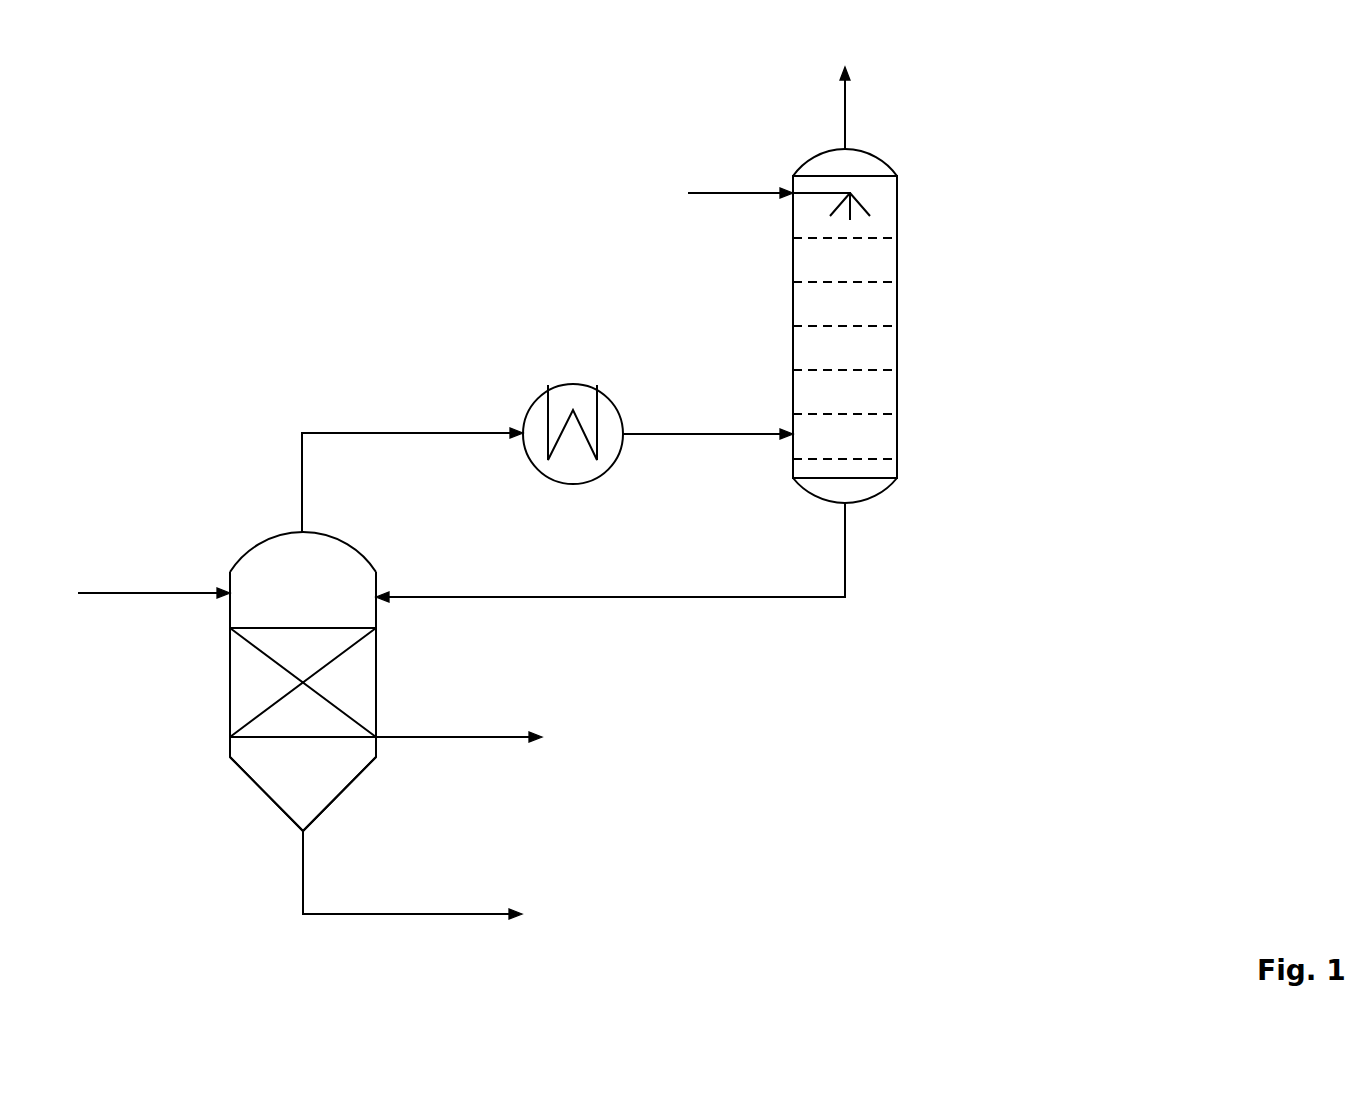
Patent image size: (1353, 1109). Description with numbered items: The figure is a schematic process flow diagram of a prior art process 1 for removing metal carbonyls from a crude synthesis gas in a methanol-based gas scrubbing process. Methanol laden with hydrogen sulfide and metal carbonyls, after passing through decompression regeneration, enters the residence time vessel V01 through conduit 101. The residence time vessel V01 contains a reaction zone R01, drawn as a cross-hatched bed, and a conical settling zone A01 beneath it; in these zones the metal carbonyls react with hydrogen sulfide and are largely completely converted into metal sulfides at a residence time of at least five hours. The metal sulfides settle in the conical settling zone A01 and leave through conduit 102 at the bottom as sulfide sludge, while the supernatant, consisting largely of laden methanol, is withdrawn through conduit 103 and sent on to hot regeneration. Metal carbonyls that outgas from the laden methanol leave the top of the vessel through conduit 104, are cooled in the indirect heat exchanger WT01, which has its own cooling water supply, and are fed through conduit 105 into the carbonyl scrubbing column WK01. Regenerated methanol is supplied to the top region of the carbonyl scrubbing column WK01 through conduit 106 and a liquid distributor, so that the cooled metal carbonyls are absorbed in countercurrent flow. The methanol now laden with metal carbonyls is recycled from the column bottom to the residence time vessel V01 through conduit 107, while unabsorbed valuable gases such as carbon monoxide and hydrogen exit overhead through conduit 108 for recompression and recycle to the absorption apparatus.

The prior art process 1 is at (1088, 623).
The conduit 101 is at (154, 581).
The conduit 102 is at (412, 885).
The conduit 103 is at (459, 728).
The conduit 104 is at (412, 472).
The conduit 105 is at (708, 425).
The conduit 106 is at (779, 192).
The conduit 107 is at (610, 565).
The conduit 108 is at (860, 108).
The residence time vessel V01 is at (229, 759).
The reaction zone R01 is at (193, 628).
The settling zone A01 is at (387, 757).
The indirect heat exchanger WT01 is at (575, 383).
The carbonyl scrubbing column WK01 is at (898, 326).